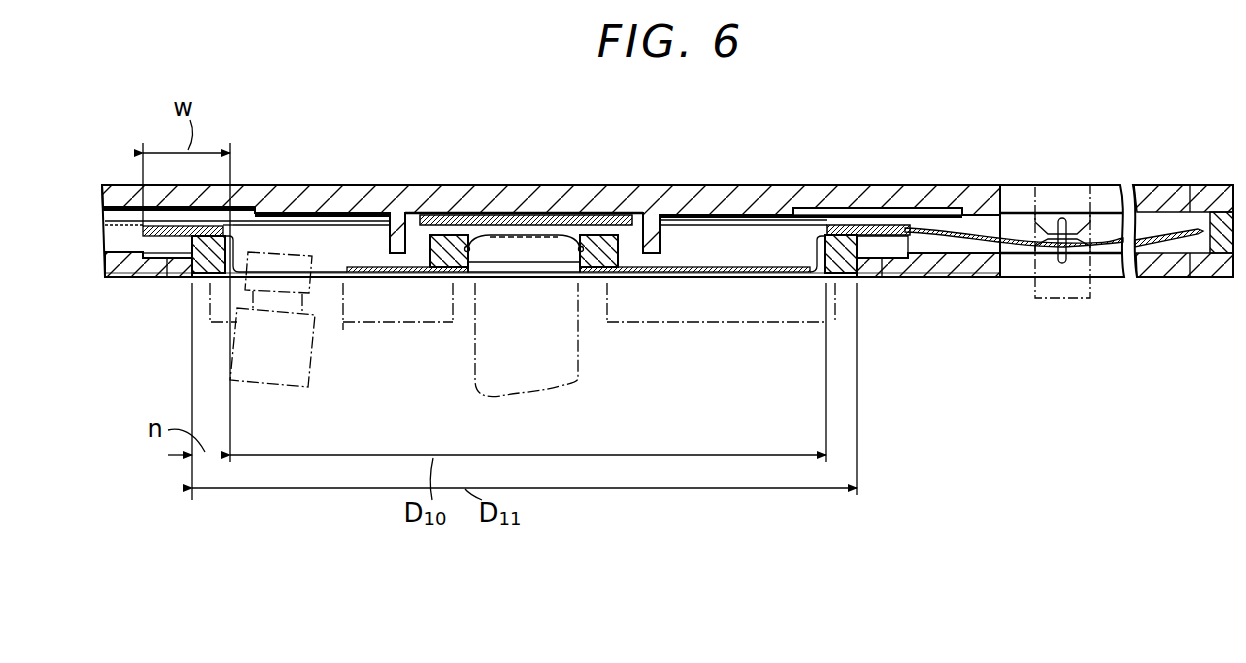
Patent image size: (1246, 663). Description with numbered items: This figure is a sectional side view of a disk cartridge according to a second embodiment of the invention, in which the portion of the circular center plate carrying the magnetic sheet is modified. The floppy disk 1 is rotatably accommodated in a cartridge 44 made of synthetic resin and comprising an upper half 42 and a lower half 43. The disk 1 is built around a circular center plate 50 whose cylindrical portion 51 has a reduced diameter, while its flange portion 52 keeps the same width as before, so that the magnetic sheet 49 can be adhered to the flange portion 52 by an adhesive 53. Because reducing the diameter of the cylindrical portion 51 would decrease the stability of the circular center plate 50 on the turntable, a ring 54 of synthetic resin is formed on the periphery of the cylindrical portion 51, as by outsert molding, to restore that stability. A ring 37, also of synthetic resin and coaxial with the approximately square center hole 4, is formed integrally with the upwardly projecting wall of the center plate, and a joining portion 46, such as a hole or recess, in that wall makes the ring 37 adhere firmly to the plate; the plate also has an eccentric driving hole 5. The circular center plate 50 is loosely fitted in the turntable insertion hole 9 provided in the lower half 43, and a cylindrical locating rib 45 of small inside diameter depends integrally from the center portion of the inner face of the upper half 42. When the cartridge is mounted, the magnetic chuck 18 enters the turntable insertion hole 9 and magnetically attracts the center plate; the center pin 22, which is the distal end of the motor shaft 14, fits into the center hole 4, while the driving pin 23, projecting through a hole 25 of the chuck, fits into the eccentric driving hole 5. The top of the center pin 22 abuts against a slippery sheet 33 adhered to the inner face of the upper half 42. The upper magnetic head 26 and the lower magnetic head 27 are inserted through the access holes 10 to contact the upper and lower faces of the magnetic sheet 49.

The floppy disk 1 is at (1152, 252).
The center hole 4 is at (478, 243).
The eccentric driving hole 5 is at (338, 268).
The turntable insertion hole 9 is at (172, 268).
The access holes 10 is at (1007, 258).
The motor shaft 14 is at (458, 378).
The magnetic chuck 18 is at (737, 324).
The center pin 22 is at (530, 245).
The driving pin 23 is at (328, 372).
The hole 25 is at (343, 326).
The upper magnetic head 26 is at (1073, 197).
The lower magnetic head 27 is at (1045, 300).
The slippery sheet 33 is at (613, 218).
The ring 37 is at (440, 245).
The upper half 42 is at (118, 192).
The lower half 43 is at (118, 263).
The cartridge 44 is at (1104, 298).
The cylindrical locating rib 45 is at (655, 248).
The joining portion 46 is at (488, 266).
The magnetic sheet 49 is at (1152, 236).
The circular center plate 50 is at (702, 283).
The cylindrical portion 51 is at (817, 256).
The flange portion 52 is at (912, 250).
The adhesive 53 is at (868, 232).
The ring 54 is at (850, 280).